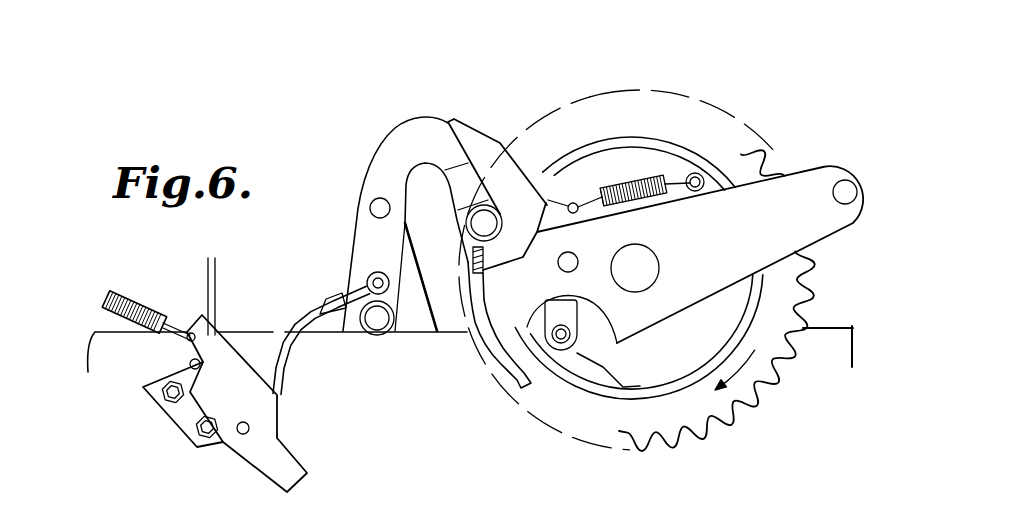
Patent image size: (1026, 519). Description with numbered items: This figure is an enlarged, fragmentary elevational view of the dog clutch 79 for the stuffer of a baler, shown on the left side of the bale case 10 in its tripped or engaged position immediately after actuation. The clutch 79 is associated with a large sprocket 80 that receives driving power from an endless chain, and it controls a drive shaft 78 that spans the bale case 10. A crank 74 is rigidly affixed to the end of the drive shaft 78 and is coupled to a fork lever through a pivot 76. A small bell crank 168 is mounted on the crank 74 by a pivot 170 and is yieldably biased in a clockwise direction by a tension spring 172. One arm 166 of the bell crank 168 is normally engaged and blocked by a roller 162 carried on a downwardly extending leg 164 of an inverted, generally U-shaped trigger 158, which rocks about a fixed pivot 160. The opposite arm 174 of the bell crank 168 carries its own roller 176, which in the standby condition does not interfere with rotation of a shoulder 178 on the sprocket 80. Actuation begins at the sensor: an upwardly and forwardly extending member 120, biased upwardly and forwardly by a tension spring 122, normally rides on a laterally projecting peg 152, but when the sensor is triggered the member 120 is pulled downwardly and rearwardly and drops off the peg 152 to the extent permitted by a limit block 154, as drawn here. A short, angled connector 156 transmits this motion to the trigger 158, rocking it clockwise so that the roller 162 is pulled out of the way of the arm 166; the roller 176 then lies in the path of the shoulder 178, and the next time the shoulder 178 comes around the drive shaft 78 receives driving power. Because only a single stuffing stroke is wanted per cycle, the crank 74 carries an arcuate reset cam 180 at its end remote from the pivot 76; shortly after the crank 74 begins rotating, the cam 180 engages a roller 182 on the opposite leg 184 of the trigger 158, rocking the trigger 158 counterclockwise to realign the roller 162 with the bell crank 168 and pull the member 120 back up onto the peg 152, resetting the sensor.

The bale case 10 is at (863, 340).
The crank 74 is at (822, 238).
The pivot 76 is at (850, 193).
The drive shaft 78 is at (658, 264).
The dog clutch 79 is at (650, 80).
The sprocket 80 is at (738, 127).
The member 120 is at (290, 469).
The tension spring 122 is at (128, 299).
The peg 152 is at (190, 363).
The limit block 154 is at (208, 333).
The connector 156 is at (270, 372).
The trigger 158 is at (370, 142).
The fixed pivot 160 is at (370, 207).
The roller 162 is at (377, 337).
The leg 164 is at (366, 260).
The arm 166 is at (487, 153).
The bell crank 168 is at (533, 153).
The pivot 170 is at (578, 260).
The tension spring 172 is at (617, 191).
The arm 174 is at (557, 306).
The roller 176 is at (580, 350).
The shoulder 178 is at (583, 367).
The reset cam 180 is at (462, 260).
The roller 182 is at (467, 222).
The leg 184 is at (450, 150).